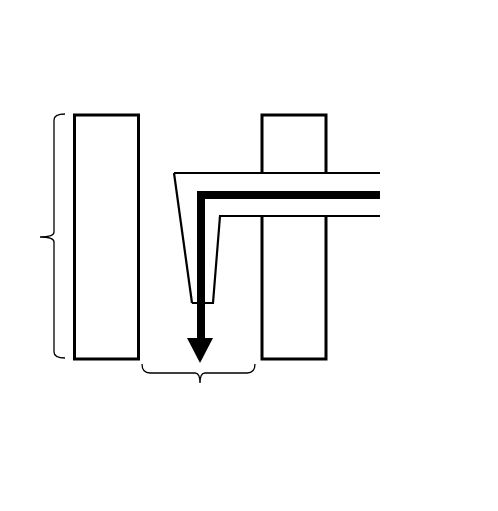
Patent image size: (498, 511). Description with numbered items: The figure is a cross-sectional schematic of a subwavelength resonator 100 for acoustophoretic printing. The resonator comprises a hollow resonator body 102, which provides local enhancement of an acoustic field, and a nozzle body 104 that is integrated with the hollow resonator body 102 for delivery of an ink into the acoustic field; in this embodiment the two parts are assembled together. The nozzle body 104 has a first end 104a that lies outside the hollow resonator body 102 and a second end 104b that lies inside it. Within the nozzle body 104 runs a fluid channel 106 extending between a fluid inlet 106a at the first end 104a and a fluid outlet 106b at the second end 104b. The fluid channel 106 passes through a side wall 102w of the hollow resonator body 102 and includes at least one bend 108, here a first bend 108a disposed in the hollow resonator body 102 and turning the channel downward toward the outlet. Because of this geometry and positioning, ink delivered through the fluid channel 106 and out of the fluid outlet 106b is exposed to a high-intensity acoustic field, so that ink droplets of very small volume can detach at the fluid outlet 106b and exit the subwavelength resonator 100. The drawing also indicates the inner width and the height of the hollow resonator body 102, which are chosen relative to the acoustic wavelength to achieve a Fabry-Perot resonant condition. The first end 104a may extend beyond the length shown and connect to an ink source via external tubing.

The subwavelength resonator 100 is at (132, 60).
The hollow resonator body 102 is at (223, 88).
The side wall 102w is at (298, 113).
The nozzle body 104 is at (364, 236).
The first end 104a is at (358, 173).
The second end 104b is at (186, 267).
The fluid channel 106 is at (220, 178).
The fluid inlet 106a is at (315, 194).
The fluid outlet 106b is at (222, 277).
The bend 108 is at (182, 190).
The first bend 108a is at (144, 180).